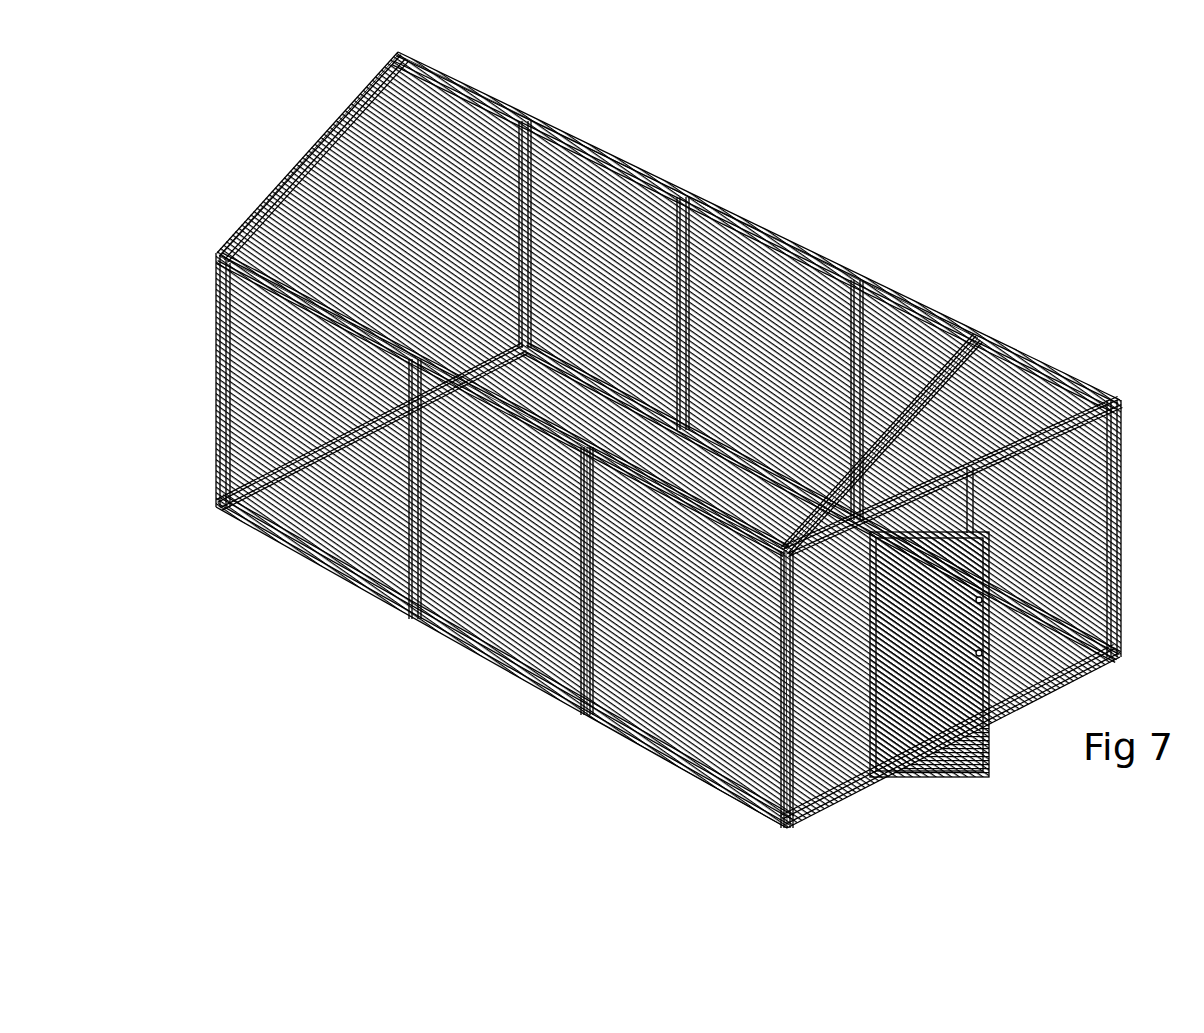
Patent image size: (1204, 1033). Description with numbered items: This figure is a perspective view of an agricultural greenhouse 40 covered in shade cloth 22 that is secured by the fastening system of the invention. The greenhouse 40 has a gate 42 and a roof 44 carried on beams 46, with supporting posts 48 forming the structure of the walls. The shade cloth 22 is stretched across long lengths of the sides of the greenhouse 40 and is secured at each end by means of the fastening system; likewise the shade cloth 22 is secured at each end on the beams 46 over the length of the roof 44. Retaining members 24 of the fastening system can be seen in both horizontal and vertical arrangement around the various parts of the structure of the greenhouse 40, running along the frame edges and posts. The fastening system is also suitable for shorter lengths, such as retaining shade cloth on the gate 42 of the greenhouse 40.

The shade cloth 22 is at (660, 690).
The retaining member 24 is at (268, 195).
The greenhouse 40 is at (755, 180).
The gate 42 is at (946, 533).
The roof 44 is at (458, 165).
The beam 46 is at (320, 142).
The supporting post 48 is at (680, 247).